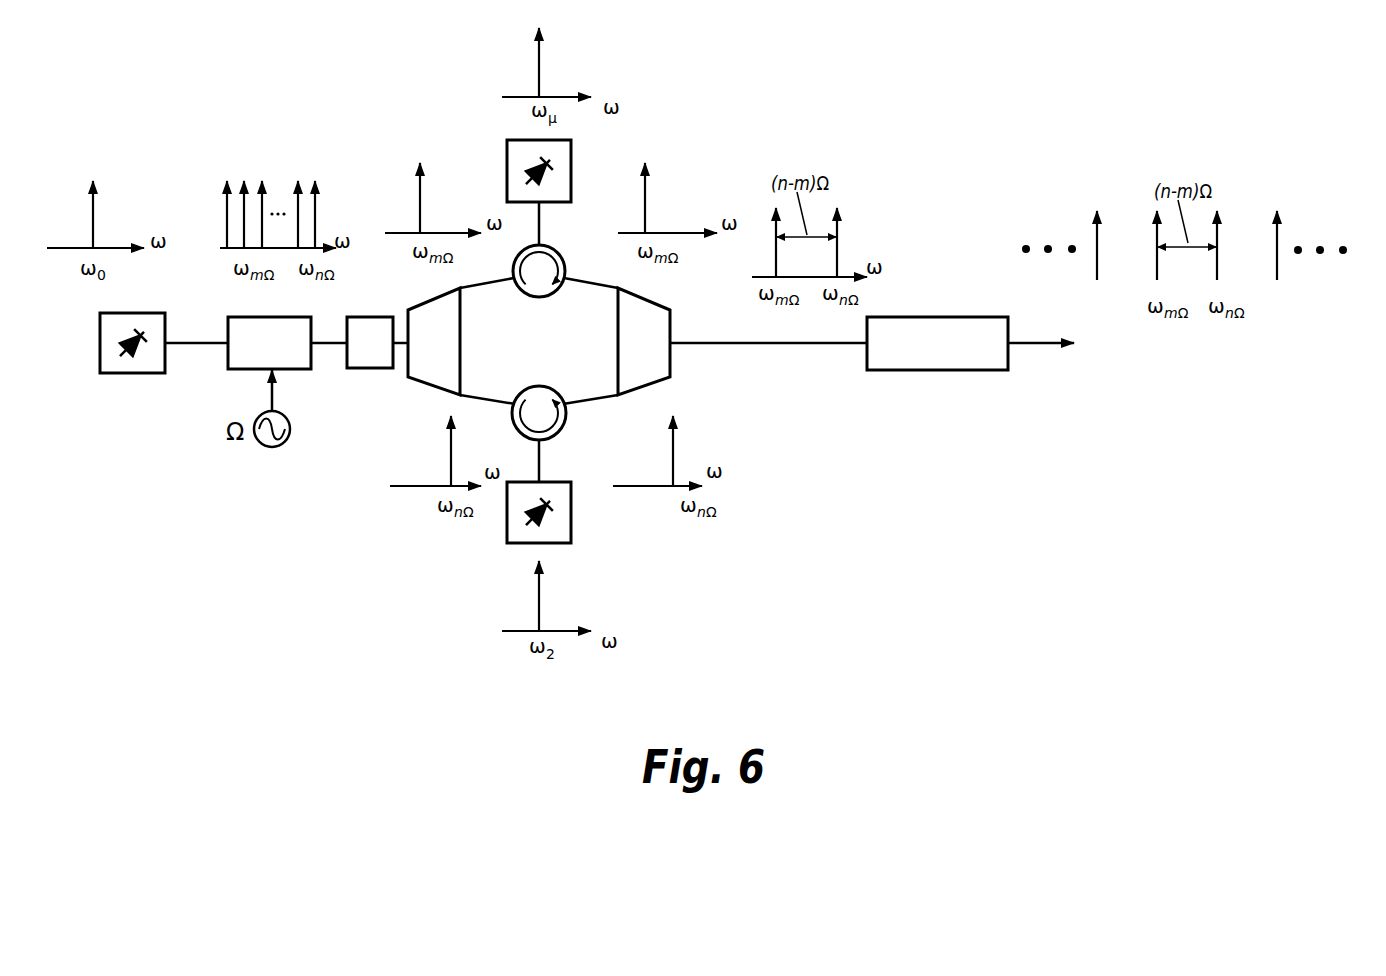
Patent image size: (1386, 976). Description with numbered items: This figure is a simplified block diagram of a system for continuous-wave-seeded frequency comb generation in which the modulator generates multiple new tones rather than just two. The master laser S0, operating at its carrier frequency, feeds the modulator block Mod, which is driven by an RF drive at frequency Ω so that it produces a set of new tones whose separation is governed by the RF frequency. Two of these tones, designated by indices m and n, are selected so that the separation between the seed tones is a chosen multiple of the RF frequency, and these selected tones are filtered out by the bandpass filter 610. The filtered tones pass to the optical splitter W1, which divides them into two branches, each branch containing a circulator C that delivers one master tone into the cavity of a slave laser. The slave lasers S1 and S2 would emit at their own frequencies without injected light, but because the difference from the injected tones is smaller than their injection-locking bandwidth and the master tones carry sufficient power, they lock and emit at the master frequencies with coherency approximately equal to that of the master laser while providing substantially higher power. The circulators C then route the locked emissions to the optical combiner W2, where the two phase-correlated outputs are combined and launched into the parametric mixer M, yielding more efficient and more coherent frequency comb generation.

The bandpass filter 610 is at (358, 317).
The master laser S0 is at (110, 343).
The slave laser S1 is at (564, 171).
The slave laser S2 is at (564, 512).
The modulator block Mod is at (269, 343).
The optical splitter W1 is at (434, 341).
The optical combiner W2 is at (644, 341).
The circulator C is at (548, 342).
The parametric mixer M is at (937, 343).